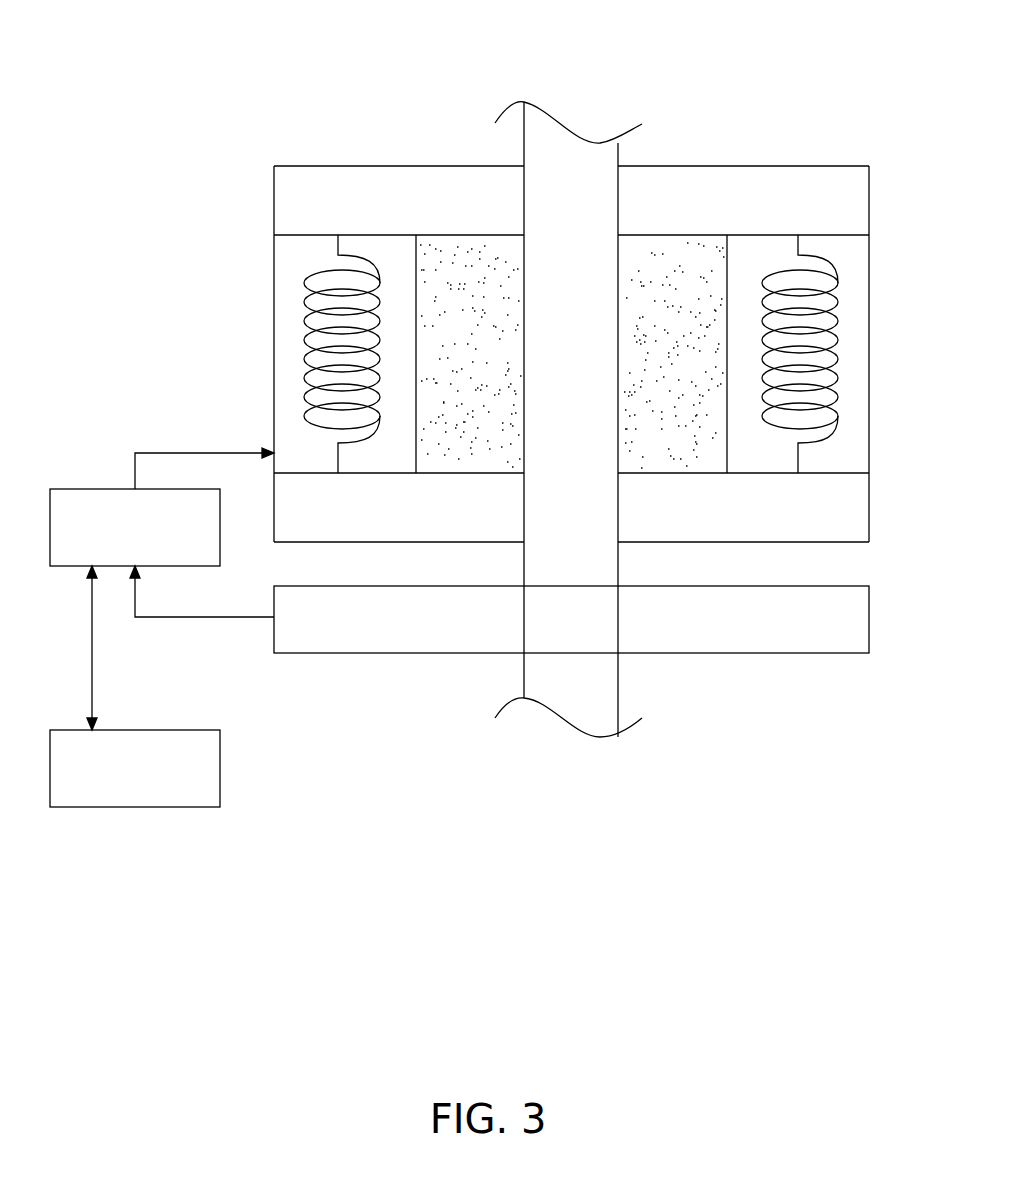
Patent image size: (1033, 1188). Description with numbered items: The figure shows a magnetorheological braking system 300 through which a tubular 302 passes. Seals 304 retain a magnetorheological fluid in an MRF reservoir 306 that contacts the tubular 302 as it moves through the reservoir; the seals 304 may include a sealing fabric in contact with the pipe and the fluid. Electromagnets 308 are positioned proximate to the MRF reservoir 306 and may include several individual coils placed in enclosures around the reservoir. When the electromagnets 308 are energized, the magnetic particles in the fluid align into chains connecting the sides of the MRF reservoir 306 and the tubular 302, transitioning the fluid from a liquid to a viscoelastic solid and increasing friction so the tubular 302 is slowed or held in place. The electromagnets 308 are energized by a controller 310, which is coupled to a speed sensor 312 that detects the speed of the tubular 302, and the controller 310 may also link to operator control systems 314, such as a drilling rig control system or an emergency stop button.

The magnetorheological braking system 300 is at (508, 1090).
The tubular 302 is at (562, 158).
The seals 304 is at (700, 178).
The MRF reservoir 306 is at (467, 253).
The electromagnets 308 is at (308, 320).
The controller 310 is at (103, 489).
The speed sensor 312 is at (869, 613).
The operator control systems 314 is at (152, 807).